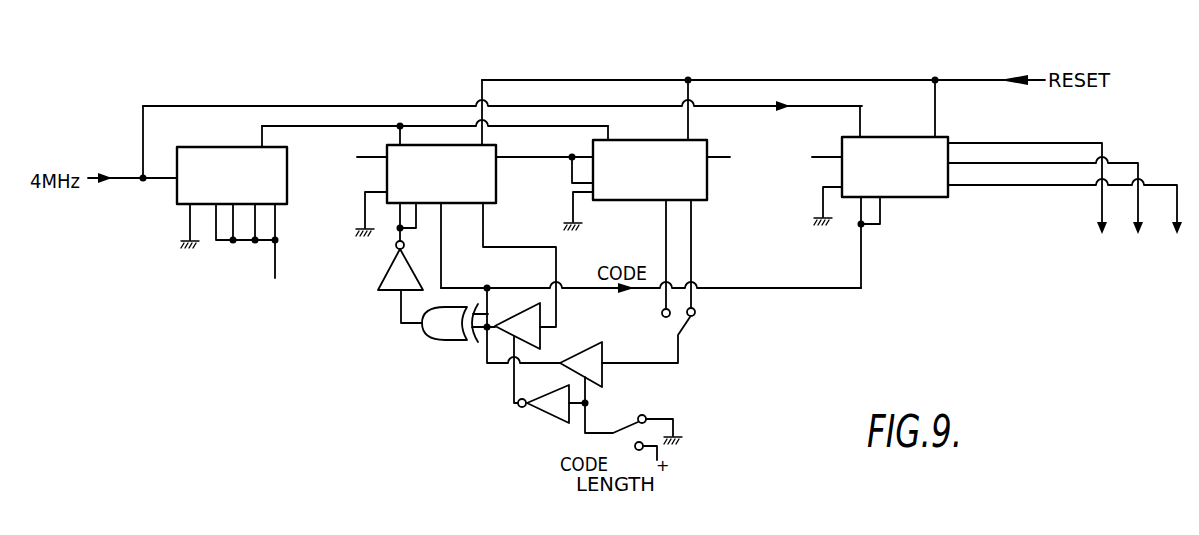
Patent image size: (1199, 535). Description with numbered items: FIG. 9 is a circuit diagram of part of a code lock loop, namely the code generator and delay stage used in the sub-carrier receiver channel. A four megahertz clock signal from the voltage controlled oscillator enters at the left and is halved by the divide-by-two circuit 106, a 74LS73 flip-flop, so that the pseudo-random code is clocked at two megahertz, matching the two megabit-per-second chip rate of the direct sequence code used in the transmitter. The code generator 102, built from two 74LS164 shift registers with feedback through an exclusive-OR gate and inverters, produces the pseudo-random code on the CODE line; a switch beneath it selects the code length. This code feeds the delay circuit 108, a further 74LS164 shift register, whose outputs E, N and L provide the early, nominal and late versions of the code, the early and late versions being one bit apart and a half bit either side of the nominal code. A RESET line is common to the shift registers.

The code generator 102 is at (638, 56).
The divide-by-two circuit 106 is at (230, 95).
The delay circuit 108 is at (921, 222).